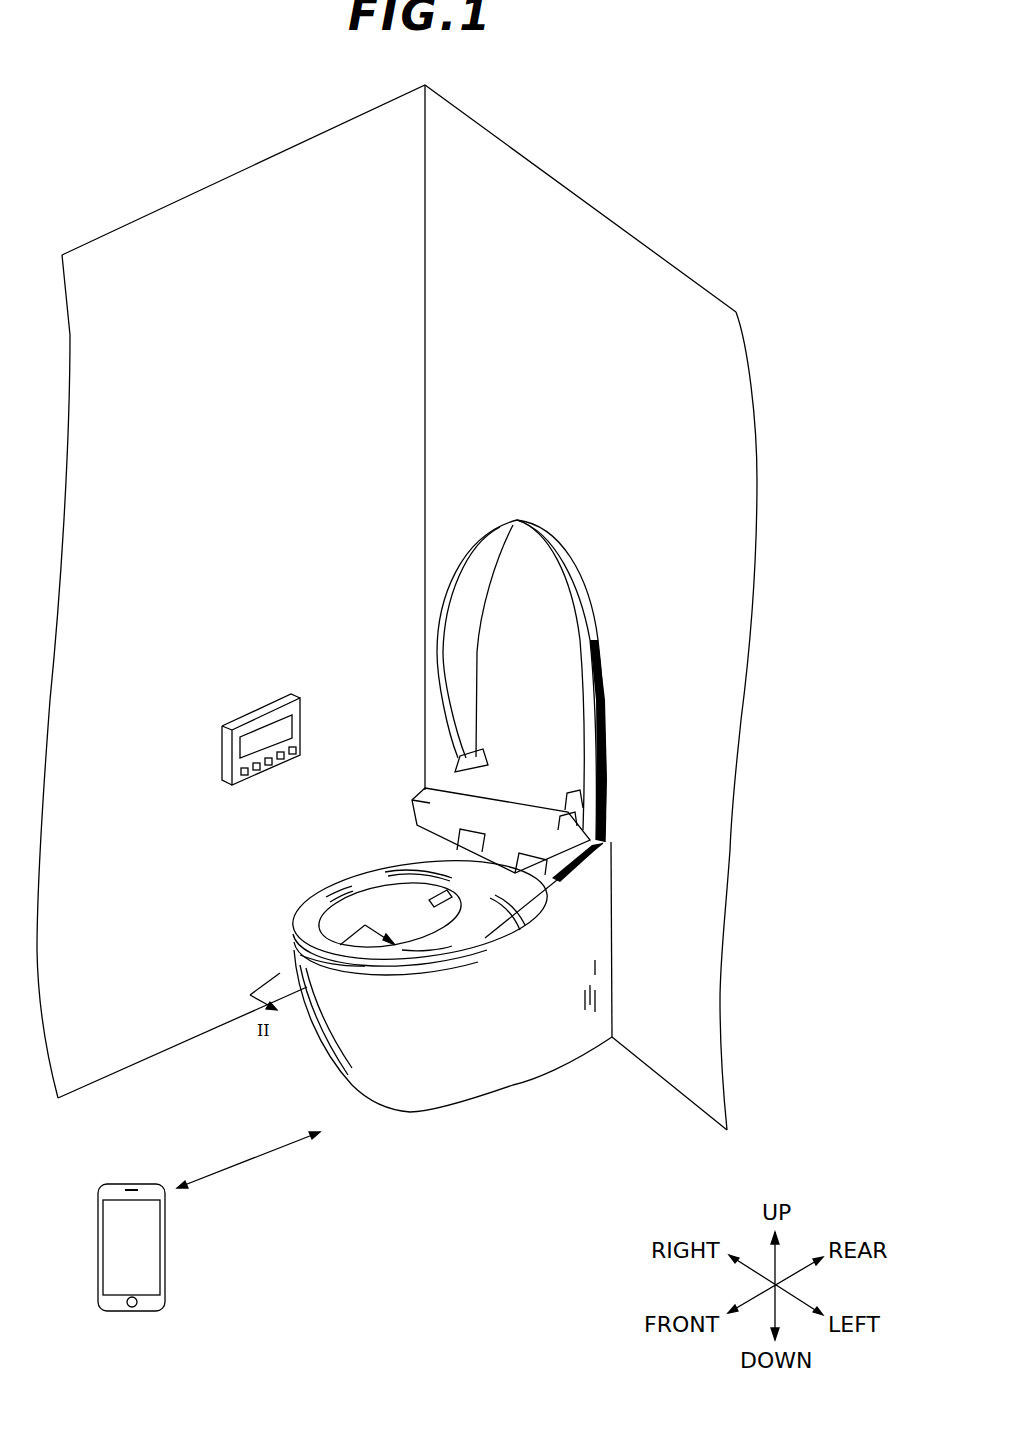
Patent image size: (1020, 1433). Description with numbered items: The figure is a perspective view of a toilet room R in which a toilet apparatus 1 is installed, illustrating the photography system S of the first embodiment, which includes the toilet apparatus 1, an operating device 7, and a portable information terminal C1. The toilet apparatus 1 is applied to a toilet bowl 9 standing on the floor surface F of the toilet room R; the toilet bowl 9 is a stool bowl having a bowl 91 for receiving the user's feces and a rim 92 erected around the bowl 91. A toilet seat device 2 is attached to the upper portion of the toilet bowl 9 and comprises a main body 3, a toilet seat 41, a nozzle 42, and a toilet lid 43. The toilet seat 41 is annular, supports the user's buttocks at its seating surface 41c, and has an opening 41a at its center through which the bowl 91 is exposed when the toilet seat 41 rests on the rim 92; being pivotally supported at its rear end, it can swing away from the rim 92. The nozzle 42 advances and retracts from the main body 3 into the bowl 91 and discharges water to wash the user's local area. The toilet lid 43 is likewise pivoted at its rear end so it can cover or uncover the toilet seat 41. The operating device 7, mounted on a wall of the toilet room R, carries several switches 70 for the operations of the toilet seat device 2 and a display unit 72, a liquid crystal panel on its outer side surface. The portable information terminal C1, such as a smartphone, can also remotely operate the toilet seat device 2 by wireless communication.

The toilet apparatus 1 is at (443, 854).
The toilet seat device 2 is at (613, 858).
The main body 3 is at (588, 882).
The operating device 7 is at (238, 731).
The toilet bowl 9 is at (422, 1055).
The toilet seat 41 is at (339, 952).
The opening 41a is at (387, 900).
The seating surface 41c is at (316, 903).
The nozzle 42 is at (446, 908).
The toilet lid 43 is at (598, 672).
The switch 70 is at (298, 760).
The display unit 72 is at (262, 770).
The bowl 91 is at (408, 923).
The rim 92 is at (497, 940).
The toilet room R is at (522, 113).
The floor surface F is at (657, 1110).
The photography system S is at (348, 1237).
The portable information terminal C1 is at (123, 1183).